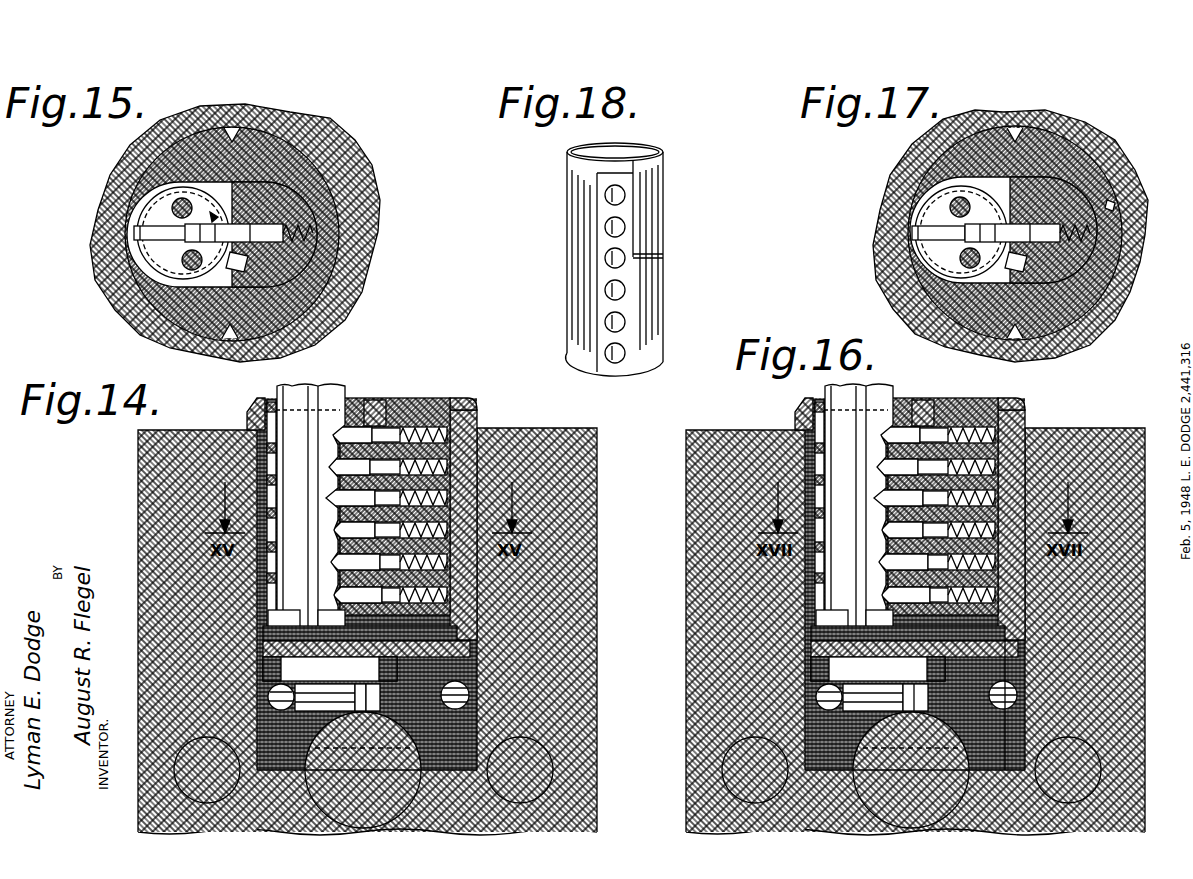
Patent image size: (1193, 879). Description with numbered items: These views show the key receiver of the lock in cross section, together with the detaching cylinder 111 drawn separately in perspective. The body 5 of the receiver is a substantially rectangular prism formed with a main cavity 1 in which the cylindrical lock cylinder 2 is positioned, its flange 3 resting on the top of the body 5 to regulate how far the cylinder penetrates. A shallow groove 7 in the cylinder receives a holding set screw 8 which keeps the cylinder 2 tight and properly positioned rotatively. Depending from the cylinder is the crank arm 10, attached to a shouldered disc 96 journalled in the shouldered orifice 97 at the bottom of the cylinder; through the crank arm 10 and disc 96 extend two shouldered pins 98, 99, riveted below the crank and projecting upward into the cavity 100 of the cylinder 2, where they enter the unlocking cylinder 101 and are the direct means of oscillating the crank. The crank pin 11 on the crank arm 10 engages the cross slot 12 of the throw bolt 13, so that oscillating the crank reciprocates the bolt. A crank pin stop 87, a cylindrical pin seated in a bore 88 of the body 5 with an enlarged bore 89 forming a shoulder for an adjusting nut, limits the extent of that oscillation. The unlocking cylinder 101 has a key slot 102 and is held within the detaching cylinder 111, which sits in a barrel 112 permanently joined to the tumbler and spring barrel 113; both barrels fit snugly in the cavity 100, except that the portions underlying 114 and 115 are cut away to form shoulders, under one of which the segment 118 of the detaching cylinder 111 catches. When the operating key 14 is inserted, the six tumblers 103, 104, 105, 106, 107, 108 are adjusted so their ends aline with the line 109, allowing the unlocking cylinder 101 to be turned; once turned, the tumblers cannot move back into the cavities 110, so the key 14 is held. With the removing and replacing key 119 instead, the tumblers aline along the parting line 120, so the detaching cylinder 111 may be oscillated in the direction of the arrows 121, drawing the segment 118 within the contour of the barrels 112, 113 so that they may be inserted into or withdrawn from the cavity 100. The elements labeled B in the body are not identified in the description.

In FIG. 17, the main cavity 1 is at (1105, 215).
In FIG. 14, the main cavity 1 is at (482, 478).
In FIG. 16, the main cavity 1 is at (1077, 652).
In FIG. 15, the lock cylinder 2 is at (318, 168).
In FIG. 17, the lock cylinder 2 is at (1095, 290).
In FIG. 16, the lock cylinder 2 is at (1093, 630).
In FIG. 14, the flange 3 is at (478, 420).
In FIG. 16, the flange 3 is at (930, 512).
In FIG. 15, the body 5 is at (355, 232).
In FIG. 17, the body 5 is at (1110, 325).
In FIG. 14, the body 5 is at (141, 585).
In FIG. 16, the body 5 is at (730, 631).
In FIG. 15, the shallow groove 7 is at (240, 333).
In FIG. 17, the shallow groove 7 is at (1015, 343).
In FIG. 15, the holding set screw 8 is at (237, 126).
In FIG. 17, the holding set screw 8 is at (1021, 125).
In FIG. 14, the crank arm 10 is at (397, 669).
In FIG. 16, the crank arm 10 is at (893, 668).
In FIG. 14, the crank pin 11 is at (380, 697).
In FIG. 16, the crank pin 11 is at (934, 695).
In FIG. 14, the cross slot 12 is at (385, 723).
In FIG. 16, the cross slot 12 is at (919, 725).
In FIG. 14, the throw bolt 13 is at (400, 748).
In FIG. 16, the throw bolt 13 is at (924, 770).
In FIG. 14, the key 14 is at (336, 385).
In FIG. 14, the crank pin stop 87 is at (325, 683).
In FIG. 16, the crank pin stop 87 is at (885, 683).
In FIG. 14, the bore 88 is at (462, 692).
In FIG. 16, the bore 88 is at (1089, 705).
In FIG. 14, the enlarged bore 89 is at (287, 682).
In FIG. 16, the enlarged bore 89 is at (852, 682).
In FIG. 14, the shouldered disc 96 is at (360, 634).
In FIG. 16, the shouldered disc 96 is at (908, 627).
In FIG. 14, the shouldered orifice 97 is at (370, 683).
In FIG. 15, the shouldered pin 98 is at (215, 278).
In FIG. 17, the shouldered pin 98 is at (960, 270).
In FIG. 14, the shouldered pin 98 is at (329, 610).
In FIG. 16, the shouldered pin 98 is at (877, 610).
In FIG. 15, the shouldered pin 99 is at (195, 182).
In FIG. 17, the shouldered pin 99 is at (925, 181).
In FIG. 14, the shouldered pin 99 is at (286, 610).
In FIG. 16, the shouldered pin 99 is at (834, 610).
In FIG. 15, the cavity 100 is at (300, 290).
In FIG. 14, the cavity 100 is at (470, 622).
In FIG. 16, the cavity 100 is at (997, 594).
In FIG. 15, the unlocking cylinder 101 is at (160, 218).
In FIG. 14, the unlocking cylinder 101 is at (380, 398).
In FIG. 15, the key slot 102 is at (165, 250).
In FIG. 14, the tumbler 103 is at (336, 433).
In FIG. 14, the tumbler 104 is at (332, 466).
In FIG. 14, the tumbler 105 is at (330, 498).
In FIG. 14, the tumbler 106 is at (333, 531).
In FIG. 14, the tumbler 107 is at (331, 563).
In FIG. 14, the tumbler 108 is at (334, 596).
In FIG. 14, the line 109 is at (376, 400).
In FIG. 15, the cavity 110 is at (340, 255).
In FIG. 17, the cavity 110 is at (1095, 260).
In FIG. 14, the cavity 110 is at (458, 399).
In FIG. 15, the detaching cylinder 111 is at (140, 228).
In FIG. 18, the detaching cylinder 111 is at (640, 146).
In FIG. 14, the detaching cylinder 111 is at (268, 398).
In FIG. 16, the detaching cylinder 111 is at (789, 505).
In FIG. 15, the barrel 112 is at (120, 181).
In FIG. 15, the tumbler and spring barrel 113 is at (300, 215).
In FIG. 17, the tumbler and spring barrel 113 is at (1060, 200).
In FIG. 14, the tumbler and spring barrel 113 is at (432, 427).
In FIG. 17, the portion 114 is at (1012, 128).
In FIG. 17, the portion 115 is at (1070, 355).
In FIG. 15, the segment 118 is at (300, 170).
In FIG. 18, the segment 118 is at (598, 365).
In FIG. 17, the segment 118 is at (1050, 165).
In FIG. 16, the segment 118 is at (1060, 434).
In FIG. 17, the removing and replacing key 119 is at (925, 228).
In FIG. 16, the removing and replacing key 119 is at (888, 498).
In FIG. 16, the parting line 120 is at (955, 492).
In FIG. 17, the arrows 121 is at (1040, 160).
In FIG. 14, the ball B is at (195, 762).
In FIG. 16, the ball B is at (903, 751).